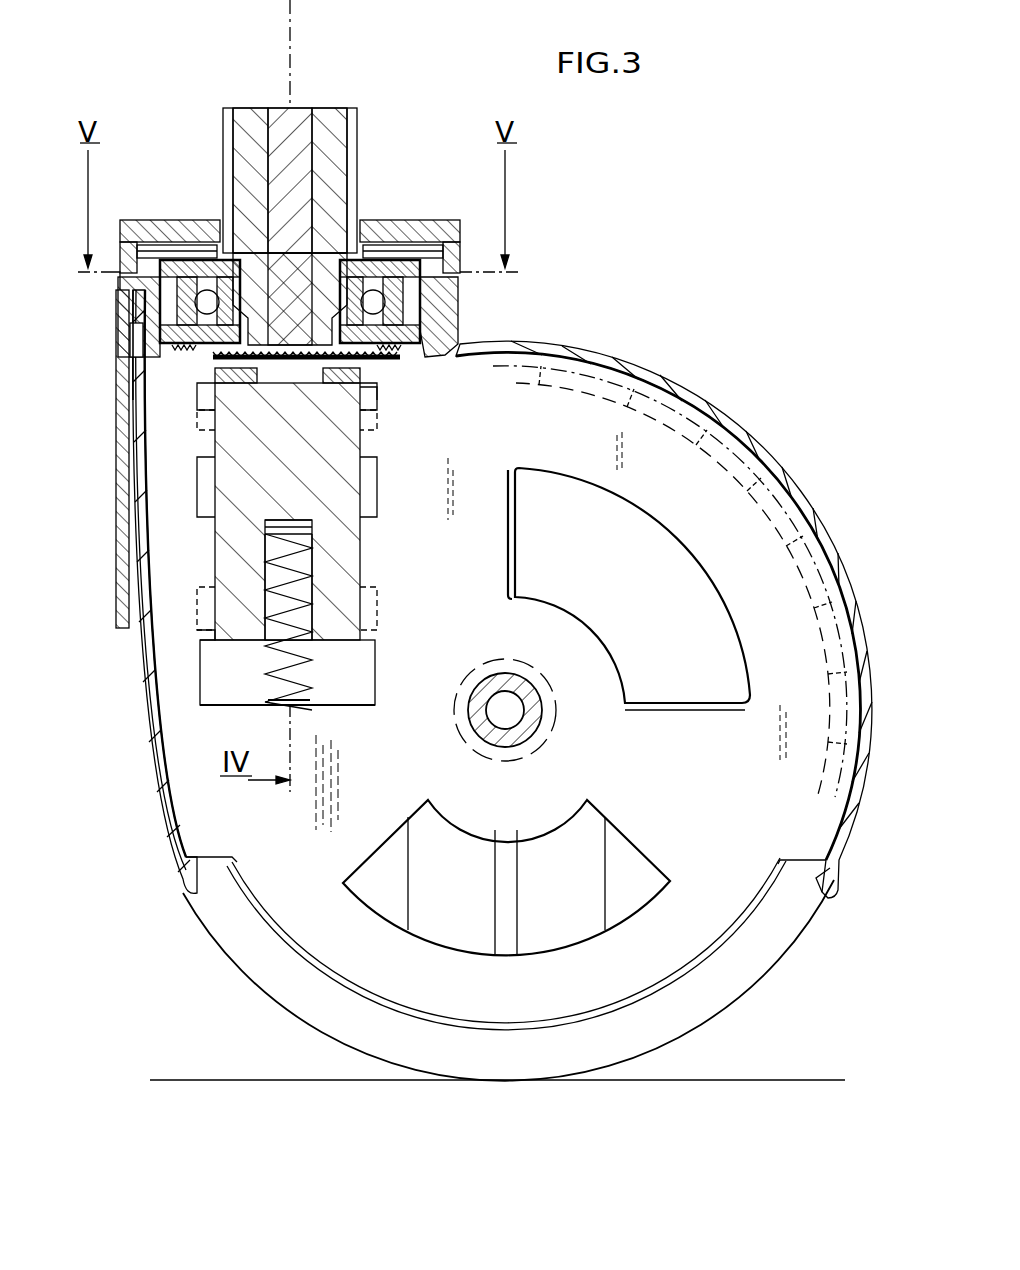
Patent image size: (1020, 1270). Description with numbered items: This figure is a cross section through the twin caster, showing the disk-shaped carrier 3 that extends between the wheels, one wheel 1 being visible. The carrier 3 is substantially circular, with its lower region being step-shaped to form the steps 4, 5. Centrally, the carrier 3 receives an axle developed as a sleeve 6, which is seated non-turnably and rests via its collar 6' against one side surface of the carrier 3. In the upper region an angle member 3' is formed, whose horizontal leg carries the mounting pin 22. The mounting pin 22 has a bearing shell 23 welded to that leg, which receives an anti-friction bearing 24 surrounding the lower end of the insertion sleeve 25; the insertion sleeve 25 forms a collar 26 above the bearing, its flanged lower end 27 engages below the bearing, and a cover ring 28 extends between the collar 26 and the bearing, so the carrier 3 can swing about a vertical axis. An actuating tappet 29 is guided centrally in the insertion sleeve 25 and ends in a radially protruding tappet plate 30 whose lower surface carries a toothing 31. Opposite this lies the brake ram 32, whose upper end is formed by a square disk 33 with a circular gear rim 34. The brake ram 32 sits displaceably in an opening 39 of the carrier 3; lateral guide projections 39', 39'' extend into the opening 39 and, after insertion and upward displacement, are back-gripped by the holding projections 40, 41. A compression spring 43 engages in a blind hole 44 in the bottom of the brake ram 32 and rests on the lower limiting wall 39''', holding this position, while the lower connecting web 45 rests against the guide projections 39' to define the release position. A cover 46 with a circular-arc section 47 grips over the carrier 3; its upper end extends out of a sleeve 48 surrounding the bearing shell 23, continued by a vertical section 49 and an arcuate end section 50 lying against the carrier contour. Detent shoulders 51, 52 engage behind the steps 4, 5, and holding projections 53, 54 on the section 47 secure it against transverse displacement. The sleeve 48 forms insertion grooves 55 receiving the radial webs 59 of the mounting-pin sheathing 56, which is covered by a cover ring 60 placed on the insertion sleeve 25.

The wheel 1 is at (258, 987).
The disk-shaped carrier 3 is at (559, 752).
The angle member 3' is at (127, 459).
The step 4 is at (222, 866).
The step 5 is at (797, 882).
The sleeve 6 is at (534, 723).
The collar 6' is at (532, 710).
The mounting pin 22 is at (205, 98).
The bearing shell 23 is at (210, 218).
The anti-friction bearing 24 is at (440, 256).
The insertion sleeve 25 is at (335, 145).
The collar 26 is at (362, 220).
The lower end of the insertion sleeve 27 is at (385, 354).
The cover ring 28 is at (388, 220).
The actuating tappet 29 is at (285, 108).
The tappet plate 30 is at (133, 357).
The toothing 31 is at (200, 384).
The brake ram 32 is at (340, 492).
The square disk 33 is at (200, 470).
The circular gear rim 34 is at (372, 398).
The opening 39 is at (320, 669).
The lateral guide projection 39' is at (260, 507).
The lateral guide projection 39'' is at (409, 430).
The lower limiting wall 39''' is at (323, 739).
The holding projection 40 is at (205, 406).
The holding projection 41 is at (205, 598).
The compression spring 43 is at (308, 682).
The blind hole 44 is at (315, 578).
The lower connecting web 45 is at (197, 630).
The cover 46 is at (755, 424).
The section 47 is at (812, 508).
The sleeve 48 is at (432, 336).
The vertically directed section 49 is at (143, 688).
The arcuate end section 50 is at (168, 824).
The detent shoulder 51 is at (186, 882).
The detent shoulder 52 is at (824, 882).
The holding projection 53 is at (832, 545).
The holding projection 54 is at (782, 508).
The insertion groove 55 is at (136, 218).
The mounting-pin sheathing 56 is at (118, 333).
The radial web 59 is at (154, 218).
The cover ring 60 is at (428, 220).